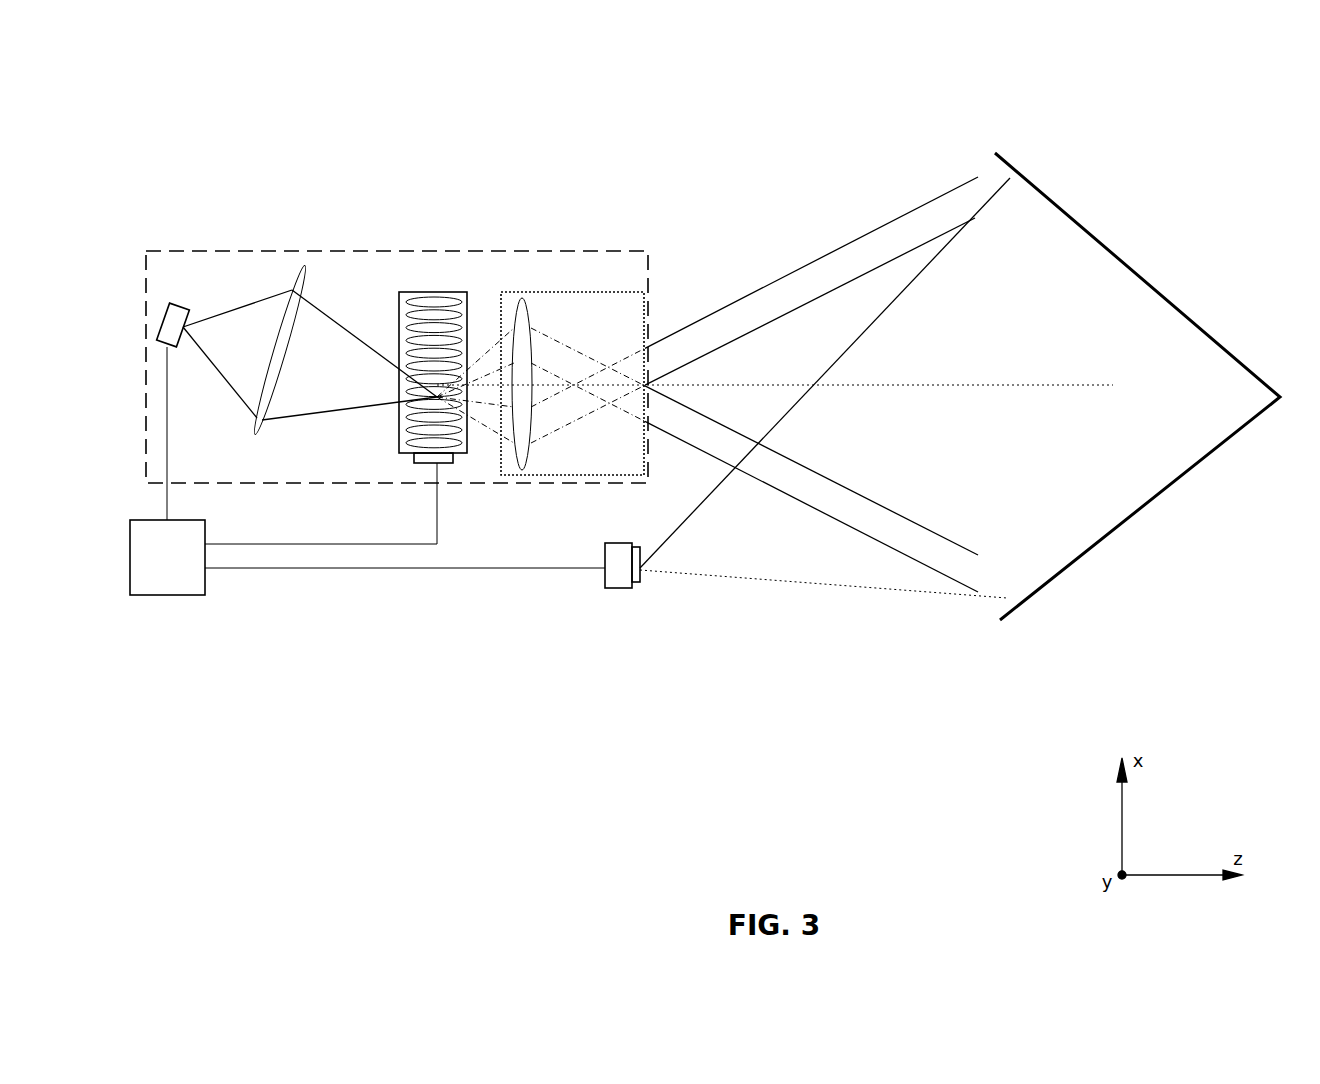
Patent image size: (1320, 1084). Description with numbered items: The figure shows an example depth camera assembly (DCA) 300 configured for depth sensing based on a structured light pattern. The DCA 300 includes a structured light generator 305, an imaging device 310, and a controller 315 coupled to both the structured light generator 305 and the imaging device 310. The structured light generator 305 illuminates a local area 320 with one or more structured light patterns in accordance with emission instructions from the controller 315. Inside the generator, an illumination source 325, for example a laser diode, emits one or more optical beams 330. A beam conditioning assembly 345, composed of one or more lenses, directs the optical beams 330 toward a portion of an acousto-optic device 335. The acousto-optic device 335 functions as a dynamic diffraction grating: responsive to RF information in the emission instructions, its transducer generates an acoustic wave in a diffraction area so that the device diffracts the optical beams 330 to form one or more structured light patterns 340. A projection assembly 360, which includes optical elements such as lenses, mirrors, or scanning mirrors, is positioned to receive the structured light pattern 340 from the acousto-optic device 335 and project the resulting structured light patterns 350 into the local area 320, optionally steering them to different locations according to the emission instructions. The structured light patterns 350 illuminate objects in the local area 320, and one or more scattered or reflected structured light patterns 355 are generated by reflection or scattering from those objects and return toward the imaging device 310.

The depth camera assembly 300 is at (1170, 121).
The structured light generator 305 is at (522, 251).
The imaging device 310 is at (610, 580).
The controller 315 is at (182, 595).
The local area 320 is at (1100, 523).
The illumination source 325 is at (180, 305).
The optical beams 330 is at (253, 303).
The acousto-optic device 335 is at (435, 290).
The structured light pattern 340 is at (492, 430).
The beam conditioning assembly 345 is at (258, 435).
The structured light patterns 350 is at (773, 308).
The scattered or reflected structured light patterns 355 is at (923, 590).
The projection assembly 360 is at (593, 290).